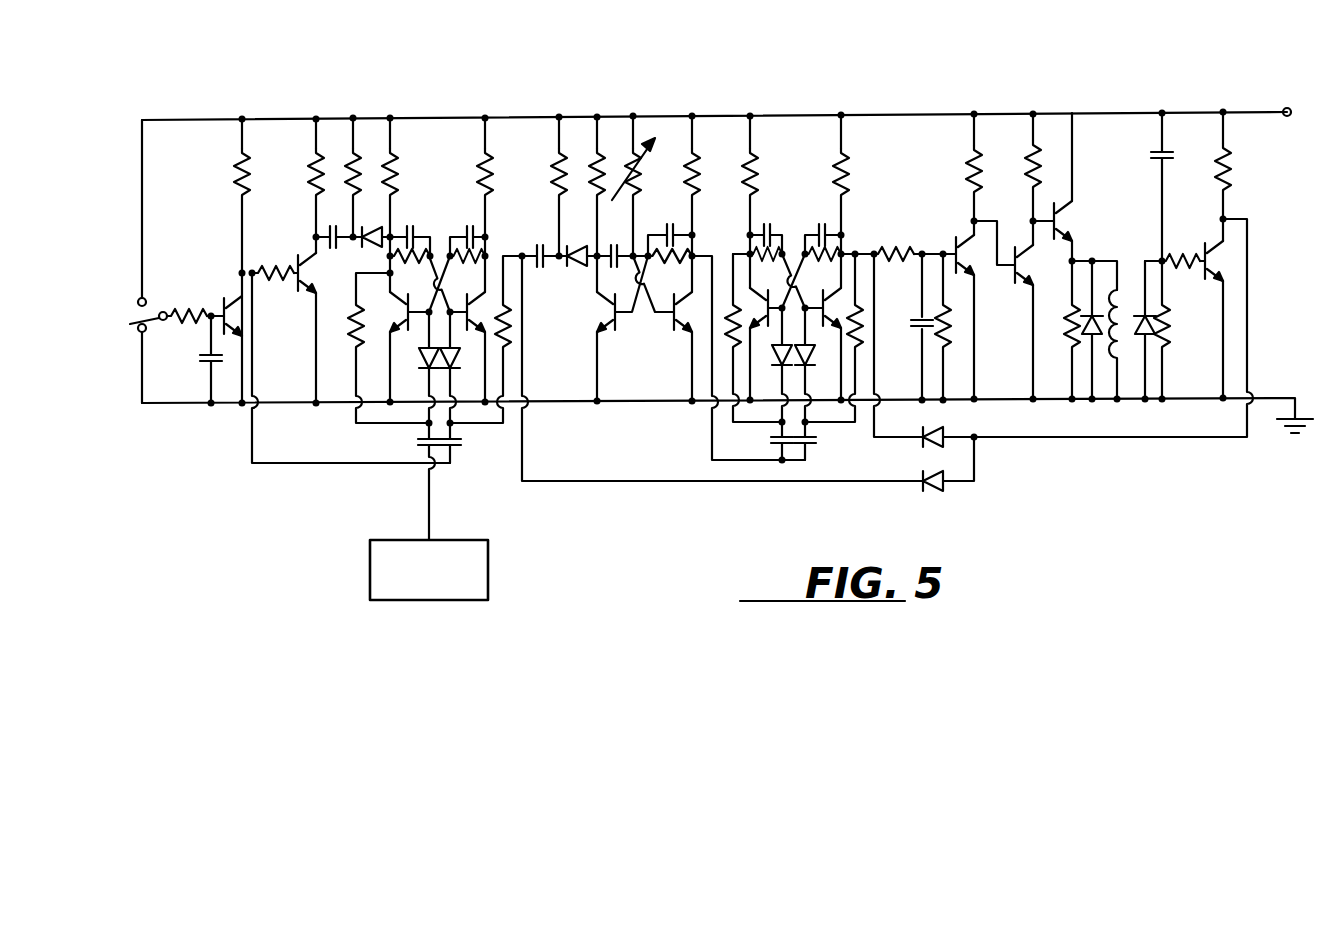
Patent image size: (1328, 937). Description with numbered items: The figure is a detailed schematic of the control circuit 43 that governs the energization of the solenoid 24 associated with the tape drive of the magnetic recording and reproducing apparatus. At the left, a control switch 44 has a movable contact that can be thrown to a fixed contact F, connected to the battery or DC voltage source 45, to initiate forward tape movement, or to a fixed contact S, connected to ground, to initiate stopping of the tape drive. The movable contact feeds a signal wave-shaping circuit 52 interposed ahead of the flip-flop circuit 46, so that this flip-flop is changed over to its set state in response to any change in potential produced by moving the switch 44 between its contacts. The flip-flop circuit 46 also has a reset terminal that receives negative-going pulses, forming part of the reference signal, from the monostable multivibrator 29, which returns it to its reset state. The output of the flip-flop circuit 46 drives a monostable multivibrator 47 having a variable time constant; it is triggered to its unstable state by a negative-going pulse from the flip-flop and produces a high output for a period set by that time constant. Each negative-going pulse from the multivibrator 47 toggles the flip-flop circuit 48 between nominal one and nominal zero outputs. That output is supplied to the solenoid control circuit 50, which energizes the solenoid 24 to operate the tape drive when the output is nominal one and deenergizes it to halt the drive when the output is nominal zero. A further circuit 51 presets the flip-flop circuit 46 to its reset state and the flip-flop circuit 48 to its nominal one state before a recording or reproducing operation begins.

The circuit 43 is at (766, 100).
The control switch 44 is at (151, 331).
The battery or DC voltage source 45 is at (1286, 106).
The flip-flop circuit 46 is at (452, 188).
The monostable multivibrator 47 is at (660, 382).
The flip-flop circuit 48 is at (809, 188).
The solenoid control circuit 50 is at (1022, 347).
The circuit 51 is at (1213, 352).
The signal wave-shaping circuit 52 is at (292, 229).
The solenoid 24 is at (1127, 294).
The monostable multivibrator 29 is at (418, 601).